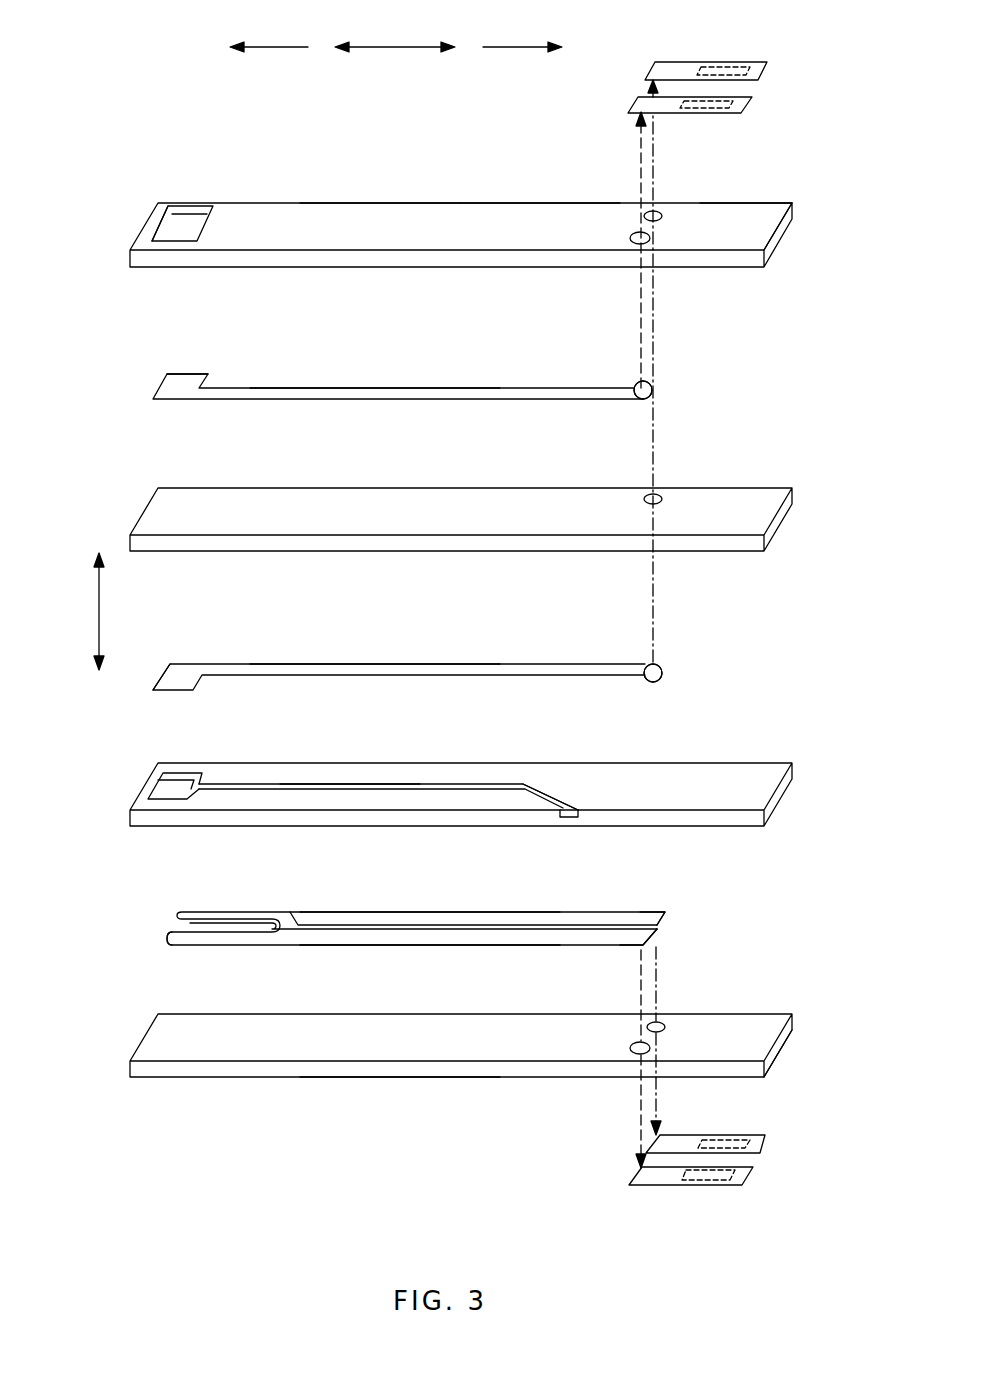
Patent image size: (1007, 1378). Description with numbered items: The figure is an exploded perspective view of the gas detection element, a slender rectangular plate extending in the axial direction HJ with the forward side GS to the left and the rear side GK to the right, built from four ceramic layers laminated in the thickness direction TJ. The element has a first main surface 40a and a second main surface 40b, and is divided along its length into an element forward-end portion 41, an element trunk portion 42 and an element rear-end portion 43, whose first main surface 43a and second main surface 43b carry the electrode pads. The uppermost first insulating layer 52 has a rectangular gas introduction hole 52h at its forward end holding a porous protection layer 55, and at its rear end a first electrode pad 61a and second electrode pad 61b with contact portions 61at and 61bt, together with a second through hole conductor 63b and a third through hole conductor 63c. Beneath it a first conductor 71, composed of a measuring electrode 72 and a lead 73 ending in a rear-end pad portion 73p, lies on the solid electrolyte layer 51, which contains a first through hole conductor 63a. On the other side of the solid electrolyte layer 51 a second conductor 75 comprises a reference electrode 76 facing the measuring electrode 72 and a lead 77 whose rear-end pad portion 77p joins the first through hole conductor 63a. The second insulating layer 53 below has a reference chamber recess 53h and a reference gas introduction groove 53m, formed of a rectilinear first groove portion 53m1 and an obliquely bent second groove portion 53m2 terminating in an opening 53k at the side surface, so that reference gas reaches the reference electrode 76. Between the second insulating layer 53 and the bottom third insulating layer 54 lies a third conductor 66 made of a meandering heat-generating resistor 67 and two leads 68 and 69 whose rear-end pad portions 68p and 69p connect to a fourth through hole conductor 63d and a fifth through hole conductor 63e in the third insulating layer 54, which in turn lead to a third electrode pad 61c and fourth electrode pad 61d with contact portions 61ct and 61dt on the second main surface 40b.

The forward side GS is at (269, 32).
The axial direction HJ is at (395, 32).
The rear side GK is at (522, 32).
The thickness direction TJ is at (84, 611).
The first main surface 40a is at (373, 215).
The second main surface 40b is at (428, 1092).
The element forward-end portion 41 is at (175, 225).
The element trunk portion 42 is at (470, 215).
The element rear-end portion 43 is at (748, 212).
The first main surface of element rear-end portion 43a is at (743, 237).
The second main surface of element rear-end portion 43b is at (742, 1083).
The solid electrolyte layer 51 is at (170, 505).
The first insulating layer 52 is at (143, 237).
The gas introduction hole 52h is at (205, 227).
The second insulating layer 53 is at (143, 790).
The reference chamber recess 53h is at (185, 775).
The reference gas introduction groove 53m is at (455, 786).
The first groove portion 53m1 is at (330, 786).
The second groove portion 53m2 is at (555, 795).
The opening 53k is at (572, 802).
The third insulating layer 54 is at (160, 1043).
The protection layer 55 is at (170, 210).
The first electrode pad 61a is at (765, 70).
The contact portion of first electrode pad 61at is at (733, 70).
The second electrode pad 61b is at (748, 104).
The contact portion of second electrode pad 61bt is at (676, 99).
The third electrode pad 61c is at (685, 1136).
The contact portion of third electrode pad 61ct is at (745, 1152).
The fourth electrode pad 61d is at (667, 1180).
The contact portion of fourth electrode pad 61dt is at (733, 1186).
The first through hole conductor 63a is at (661, 496).
The second through hole conductor 63b is at (658, 213).
The third through hole conductor 63c is at (637, 235).
The fourth through hole conductor 63d is at (658, 1022).
The fifth through hole conductor 63e is at (628, 1045).
The third conductor 66 is at (418, 925).
The heat-generating resistor 67 is at (167, 933).
The lead 68 is at (420, 912).
The rear-end pad portion 68p is at (665, 908).
The lead 69 is at (460, 933).
The rear-end pad portion 69p is at (640, 945).
The first conductor 71 is at (395, 322).
The measuring electrode 72 is at (182, 380).
The lead 73 is at (365, 390).
The rear-end pad portion 73p is at (636, 386).
The second conductor 75 is at (395, 614).
The reference electrode 76 is at (185, 670).
The lead 77 is at (373, 670).
The rear-end pad portion 77p is at (660, 665).